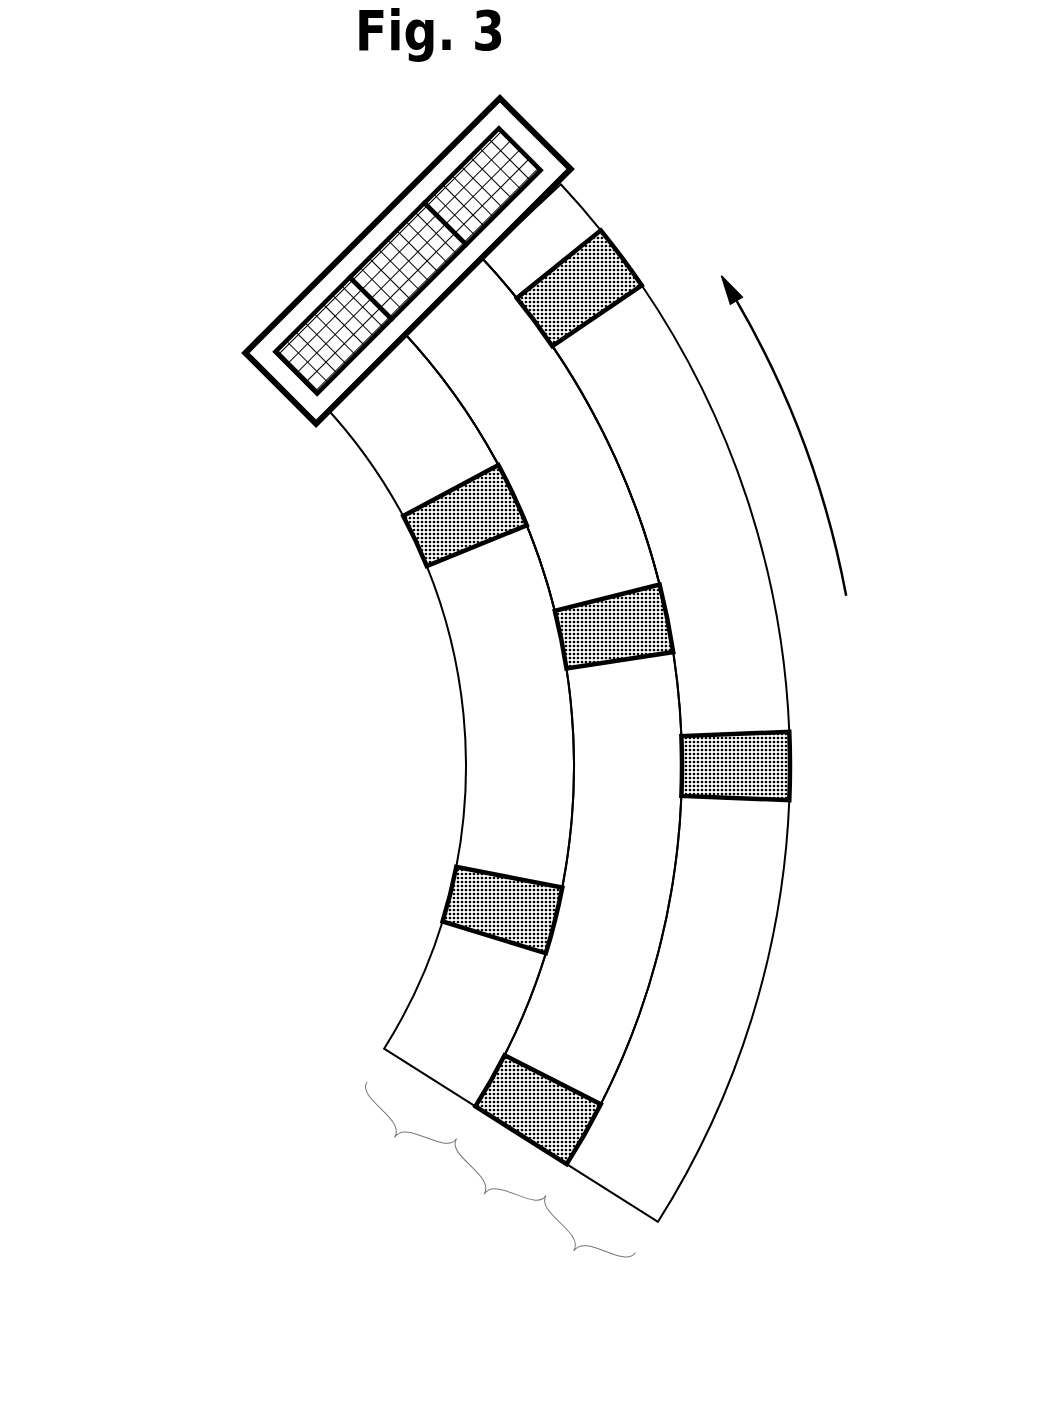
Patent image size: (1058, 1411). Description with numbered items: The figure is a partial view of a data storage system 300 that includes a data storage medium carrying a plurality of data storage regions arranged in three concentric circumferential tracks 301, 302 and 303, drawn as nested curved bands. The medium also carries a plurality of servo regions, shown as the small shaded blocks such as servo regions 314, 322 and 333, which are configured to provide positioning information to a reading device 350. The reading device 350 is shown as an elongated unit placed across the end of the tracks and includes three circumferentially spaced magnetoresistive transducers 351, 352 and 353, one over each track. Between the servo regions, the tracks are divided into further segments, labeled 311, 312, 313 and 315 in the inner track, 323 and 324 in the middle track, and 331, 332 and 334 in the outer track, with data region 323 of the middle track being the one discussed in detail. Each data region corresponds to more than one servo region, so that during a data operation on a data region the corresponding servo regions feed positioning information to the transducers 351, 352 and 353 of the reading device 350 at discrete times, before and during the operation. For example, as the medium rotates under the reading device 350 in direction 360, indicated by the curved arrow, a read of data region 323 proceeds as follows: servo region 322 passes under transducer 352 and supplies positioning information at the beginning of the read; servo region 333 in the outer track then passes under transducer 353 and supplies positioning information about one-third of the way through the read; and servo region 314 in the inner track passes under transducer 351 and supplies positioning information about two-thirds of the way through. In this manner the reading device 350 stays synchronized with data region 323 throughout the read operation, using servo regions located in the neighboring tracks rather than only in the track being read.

The data storage system 300 is at (203, 255).
The circumferential track 301 is at (394, 1137).
The circumferential track 302 is at (484, 1194).
The circumferential track 303 is at (574, 1250).
The first ring segment 311 is at (411, 424).
The first ring active segment 312 is at (531, 434).
The first ring segment 313 is at (500, 706).
The servo region 314 is at (503, 910).
The first ring segment 315 is at (465, 1014).
The servo region 322 is at (614, 627).
The data region 323 is at (593, 878).
The second ring active segment 324 is at (537, 1109).
The third ring active segment 331 is at (579, 288).
The third ring segment 332 is at (670, 510).
The servo region 333 is at (735, 766).
The third ring segment 334 is at (678, 1009).
The reading device 350 is at (572, 170).
The magnetoresistive transducer 351 is at (333, 335).
The magnetoresistive transducer 352 is at (408, 261).
The magnetoresistive transducer 353 is at (482, 186).
The direction 360 is at (760, 337).